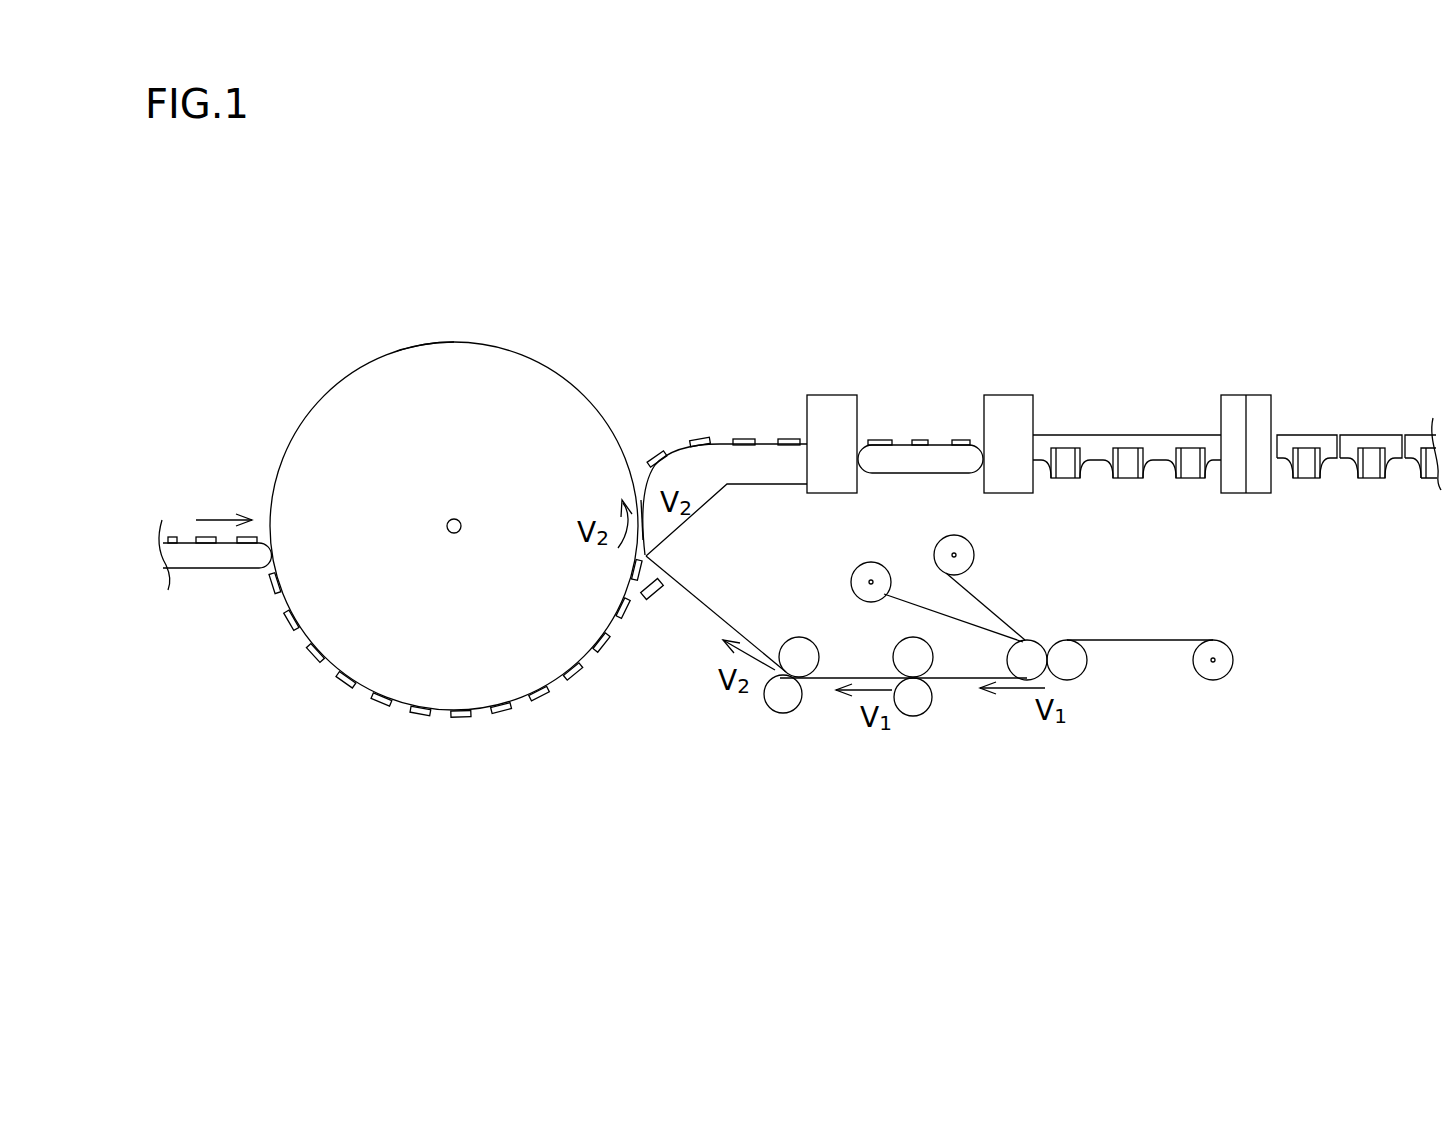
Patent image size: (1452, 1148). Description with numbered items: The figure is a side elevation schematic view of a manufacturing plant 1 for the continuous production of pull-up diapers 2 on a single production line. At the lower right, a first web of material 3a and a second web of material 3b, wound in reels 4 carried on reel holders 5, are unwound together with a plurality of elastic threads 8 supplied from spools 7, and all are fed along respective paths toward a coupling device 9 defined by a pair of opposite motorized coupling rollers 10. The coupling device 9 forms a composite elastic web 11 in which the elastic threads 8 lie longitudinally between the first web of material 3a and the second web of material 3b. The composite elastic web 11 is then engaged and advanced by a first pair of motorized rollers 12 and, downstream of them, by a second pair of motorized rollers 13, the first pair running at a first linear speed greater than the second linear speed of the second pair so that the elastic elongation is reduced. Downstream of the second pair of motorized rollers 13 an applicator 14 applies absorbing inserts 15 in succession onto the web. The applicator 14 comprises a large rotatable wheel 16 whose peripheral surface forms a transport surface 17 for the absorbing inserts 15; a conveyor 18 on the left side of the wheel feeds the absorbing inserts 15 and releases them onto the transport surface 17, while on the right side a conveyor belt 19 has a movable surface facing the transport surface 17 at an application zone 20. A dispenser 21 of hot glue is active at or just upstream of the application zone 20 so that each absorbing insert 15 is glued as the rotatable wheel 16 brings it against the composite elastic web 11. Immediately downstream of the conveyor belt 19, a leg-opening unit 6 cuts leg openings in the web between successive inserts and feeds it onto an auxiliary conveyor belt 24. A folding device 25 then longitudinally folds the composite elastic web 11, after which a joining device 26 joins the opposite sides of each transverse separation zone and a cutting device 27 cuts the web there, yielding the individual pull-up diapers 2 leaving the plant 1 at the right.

The manufacturing plant 1 is at (348, 800).
The pull-up diapers 2 is at (1328, 414).
The first web of material 3a is at (932, 613).
The second web of material 3b is at (1162, 640).
The reels 4 is at (851, 578).
The reel holders 5 is at (870, 578).
The leg-opening unit 6 is at (836, 405).
The spools 7 is at (957, 553).
The elastic threads 8 is at (1025, 636).
The coupling device 9 is at (1098, 622).
The coupling rollers 10 is at (1007, 668).
The composite elastic web 11 is at (709, 608).
The first pair of motorized rollers 12 is at (893, 642).
The second pair of motorized rollers 13 is at (798, 636).
The applicator 14 is at (603, 340).
The absorbing inserts 15 is at (196, 537).
The rotatable wheel 16 is at (466, 322).
The transport surface 17 is at (397, 350).
The conveyor 18 is at (238, 595).
The conveyor belt 19 is at (740, 512).
The application zone 20 is at (638, 440).
The dispenser of hot glue 21 is at (657, 597).
The auxiliary conveyor belt 24 is at (968, 415).
The folding device 25 is at (1019, 416).
The joining device 26 is at (1237, 406).
The cutting device 27 is at (1261, 422).